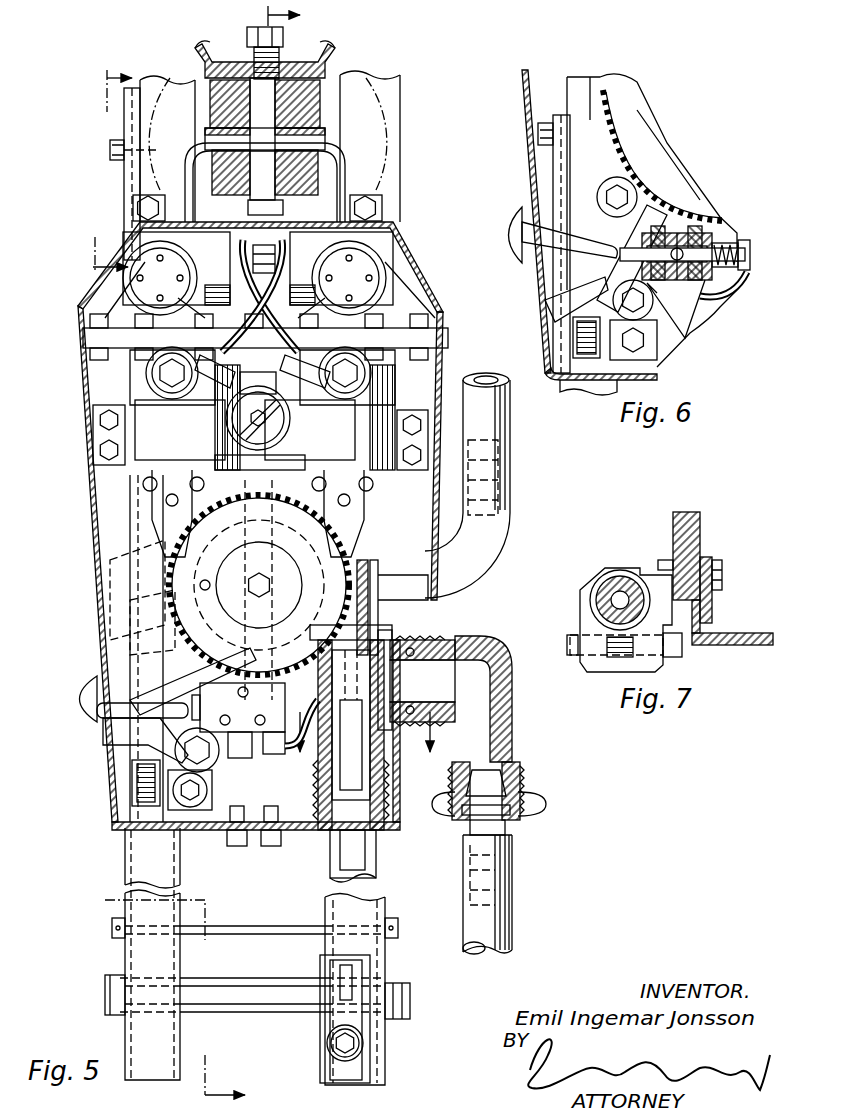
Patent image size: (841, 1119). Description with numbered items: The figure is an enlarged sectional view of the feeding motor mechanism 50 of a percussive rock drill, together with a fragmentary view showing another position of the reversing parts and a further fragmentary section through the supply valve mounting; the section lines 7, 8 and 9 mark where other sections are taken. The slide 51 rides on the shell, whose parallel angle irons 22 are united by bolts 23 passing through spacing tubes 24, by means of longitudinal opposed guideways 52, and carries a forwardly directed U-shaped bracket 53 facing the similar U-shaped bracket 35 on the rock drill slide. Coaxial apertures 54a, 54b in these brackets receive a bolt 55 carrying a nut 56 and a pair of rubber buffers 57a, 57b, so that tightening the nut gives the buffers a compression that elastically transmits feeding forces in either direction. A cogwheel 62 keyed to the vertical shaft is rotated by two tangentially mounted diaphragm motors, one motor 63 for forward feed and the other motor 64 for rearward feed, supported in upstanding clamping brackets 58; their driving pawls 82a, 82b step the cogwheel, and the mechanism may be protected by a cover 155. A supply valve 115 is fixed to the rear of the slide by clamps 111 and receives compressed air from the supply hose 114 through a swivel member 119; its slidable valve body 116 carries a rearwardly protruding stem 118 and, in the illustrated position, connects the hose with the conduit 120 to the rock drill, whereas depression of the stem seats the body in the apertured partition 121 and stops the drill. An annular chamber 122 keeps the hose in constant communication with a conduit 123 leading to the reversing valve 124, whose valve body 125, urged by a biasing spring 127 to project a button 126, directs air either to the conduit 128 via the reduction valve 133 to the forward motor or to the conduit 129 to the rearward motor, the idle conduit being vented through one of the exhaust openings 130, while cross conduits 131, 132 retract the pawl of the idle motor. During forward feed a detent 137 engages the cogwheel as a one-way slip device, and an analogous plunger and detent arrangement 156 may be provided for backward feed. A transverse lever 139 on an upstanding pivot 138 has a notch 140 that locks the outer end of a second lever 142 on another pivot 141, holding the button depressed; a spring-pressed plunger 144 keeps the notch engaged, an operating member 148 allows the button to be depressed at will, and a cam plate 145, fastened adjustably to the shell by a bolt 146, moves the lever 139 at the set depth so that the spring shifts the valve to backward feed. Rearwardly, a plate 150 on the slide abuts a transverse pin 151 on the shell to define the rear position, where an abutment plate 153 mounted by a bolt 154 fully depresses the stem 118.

In FIG. 5, the U-shaped bracket 35 is at (215, 60).
In FIG. 5, the nut 56 is at (262, 38).
In FIG. 5, the aperture 54a is at (283, 62).
In FIG. 5, the section line 8 is at (212, 557).
In FIG. 5, the section line 9 is at (112, 170).
In FIG. 5, the section line 7 is at (372, 747).
In FIG. 5, the bolt 55 is at (265, 110).
In FIG. 5, the rubber buffer 57a is at (305, 110).
In FIG. 5, the bolt 146 is at (112, 160).
In FIG. 6, the bolt 146 is at (538, 135).
In FIG. 5, the aperture 54b is at (282, 141).
In FIG. 5, the rubber buffer 57b is at (300, 178).
In FIG. 5, the cam plate 145 is at (132, 210).
In FIG. 6, the cam plate 145 is at (559, 273).
In FIG. 5, the U-shaped bracket 53 is at (340, 193).
In FIG. 5, the cover 155 is at (92, 287).
In FIG. 5, the diaphragm motor 63 is at (150, 370).
In FIG. 5, the diaphragm motor 64 is at (308, 358).
In FIG. 5, the clamping bracket 58 is at (125, 432).
In FIG. 5, the cross conduit 132 is at (226, 392).
In FIG. 5, the reduction valve 133 is at (242, 428).
In FIG. 5, the cross conduit 131 is at (293, 378).
In FIG. 5, the conduit 120 is at (500, 425).
In FIG. 5, the feeding motor mechanism 50 is at (80, 498).
In FIG. 5, the driving pawl 82a is at (160, 540).
In FIG. 5, the driving pawl 82b is at (360, 545).
In FIG. 5, the conduit 128 is at (168, 563).
In FIG. 5, the detent 137 is at (262, 545).
In FIG. 5, the cogwheel 62 is at (335, 592).
In FIG. 6, the cogwheel 62 is at (632, 120).
In FIG. 5, the plunger and detent arrangement 156 is at (175, 618).
In FIG. 5, the conduit 129 is at (296, 608).
In FIG. 5, the lever 142 is at (177, 672).
In FIG. 6, the lever 142 is at (605, 222).
In FIG. 5, the apertured partition 121 is at (382, 645).
In FIG. 5, the operating member 148 is at (78, 697).
In FIG. 6, the operating member 148 is at (514, 225).
In FIG. 5, the annular chamber 122 is at (380, 683).
In FIG. 5, the swivel member 119 is at (508, 713).
In FIG. 5, the lever 139 is at (130, 740).
In FIG. 6, the lever 139 is at (562, 302).
In FIG. 5, the reversing valve 124 is at (215, 737).
In FIG. 6, the reversing valve 124 is at (715, 236).
In FIG. 5, the conduit 123 is at (285, 750).
In FIG. 6, the conduit 123 is at (718, 290).
In FIG. 5, the notch 140 is at (167, 734).
In FIG. 6, the notch 140 is at (600, 297).
In FIG. 5, the spring-pressed plunger 144 is at (148, 772).
In FIG. 6, the spring-pressed plunger 144 is at (593, 323).
In FIG. 5, the supply valve 115 is at (385, 768).
In FIG. 7, the supply valve 115 is at (623, 580).
In FIG. 5, the angle iron 22 is at (146, 851).
In FIG. 7, the angle iron 22 is at (723, 641).
In FIG. 5, the plate 150 is at (257, 818).
In FIG. 5, the valve body 116 is at (347, 768).
In FIG. 7, the valve body 116 is at (610, 592).
In FIG. 5, the stem 118 is at (350, 853).
In FIG. 5, the supply hose 114 is at (478, 926).
In FIG. 5, the transverse pin 151 is at (212, 926).
In FIG. 5, the abutment plate 153 is at (338, 959).
In FIG. 5, the spacing tube 24 is at (237, 996).
In FIG. 5, the bolt 23 is at (300, 998).
In FIG. 5, the bolt 154 is at (363, 1041).
In FIG. 6, the pivot 141 is at (620, 184).
In FIG. 6, the button 126 is at (630, 247).
In FIG. 6, the valve body 125 is at (677, 247).
In FIG. 6, the biasing spring 127 is at (730, 250).
In FIG. 6, the exhaust opening 130 is at (680, 328).
In FIG. 6, the pivot 138 is at (642, 310).
In FIG. 7, the slide 51 is at (688, 538).
In FIG. 7, the clamp 111 is at (588, 615).
In FIG. 7, the guideway 52 is at (701, 588).